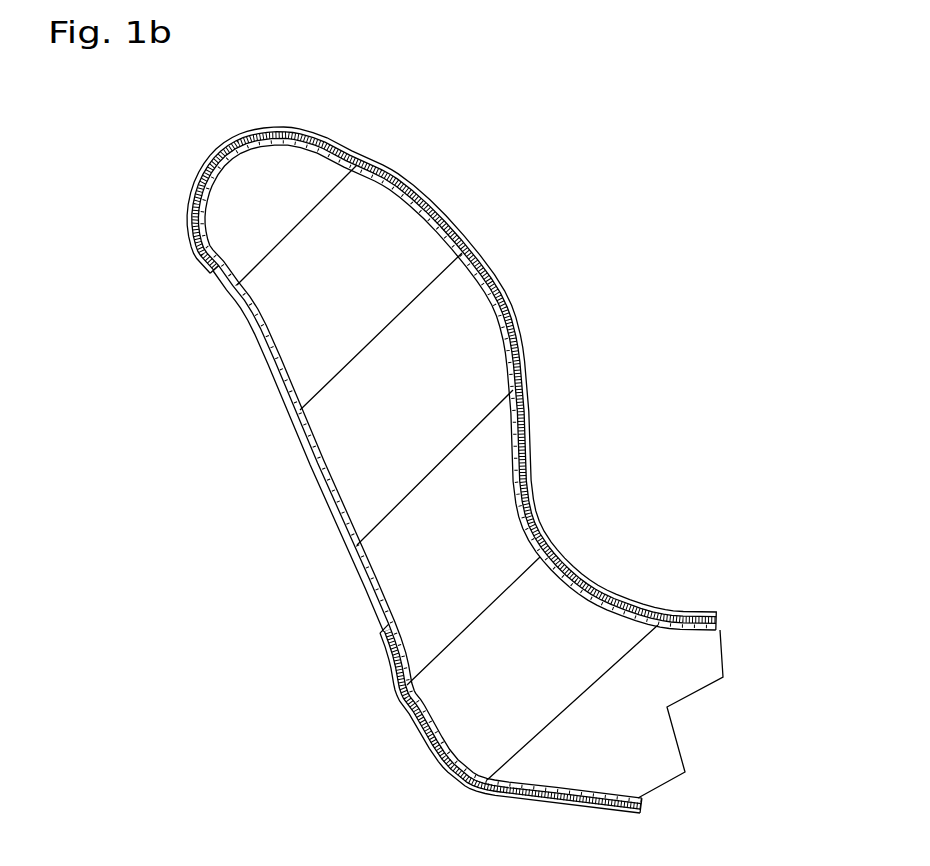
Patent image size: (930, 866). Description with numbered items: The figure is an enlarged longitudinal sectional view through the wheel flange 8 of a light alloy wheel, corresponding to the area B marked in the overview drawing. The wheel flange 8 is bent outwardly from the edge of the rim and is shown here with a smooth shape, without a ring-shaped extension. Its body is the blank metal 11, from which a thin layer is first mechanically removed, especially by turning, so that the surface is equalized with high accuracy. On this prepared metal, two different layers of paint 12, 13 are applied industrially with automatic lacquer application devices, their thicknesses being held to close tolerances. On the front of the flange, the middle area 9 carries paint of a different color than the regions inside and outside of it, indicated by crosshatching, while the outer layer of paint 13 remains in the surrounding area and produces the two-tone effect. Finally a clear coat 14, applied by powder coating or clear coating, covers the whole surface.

The wheel flange 8 is at (485, 157).
The middle area 9 is at (290, 472).
The blank metal 11 is at (450, 340).
The layer of paint 12 is at (717, 628).
The outer layer of paint 13 is at (712, 619).
The clear coat 14 is at (713, 613).
The area B is at (373, 97).